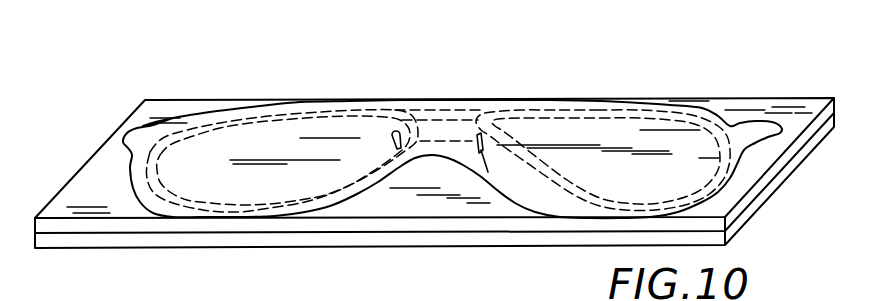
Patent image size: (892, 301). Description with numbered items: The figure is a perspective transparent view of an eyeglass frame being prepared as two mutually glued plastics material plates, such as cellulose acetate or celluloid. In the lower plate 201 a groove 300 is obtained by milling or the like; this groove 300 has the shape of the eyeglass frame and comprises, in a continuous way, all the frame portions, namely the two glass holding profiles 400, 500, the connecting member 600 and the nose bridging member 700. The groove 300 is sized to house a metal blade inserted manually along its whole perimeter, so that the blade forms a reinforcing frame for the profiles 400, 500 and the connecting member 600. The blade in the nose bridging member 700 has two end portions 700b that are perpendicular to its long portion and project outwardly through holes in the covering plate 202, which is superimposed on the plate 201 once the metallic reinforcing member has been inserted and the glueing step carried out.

The groove 300 is at (735, 132).
The covering plate 202 is at (823, 122).
The plate 201 is at (782, 176).
The glass holding profile 500 is at (245, 125).
The glass holding profile 400 is at (633, 112).
The connecting member 600 is at (431, 112).
The nose bridging member 700 is at (462, 140).
The end portions 700b is at (572, 36).